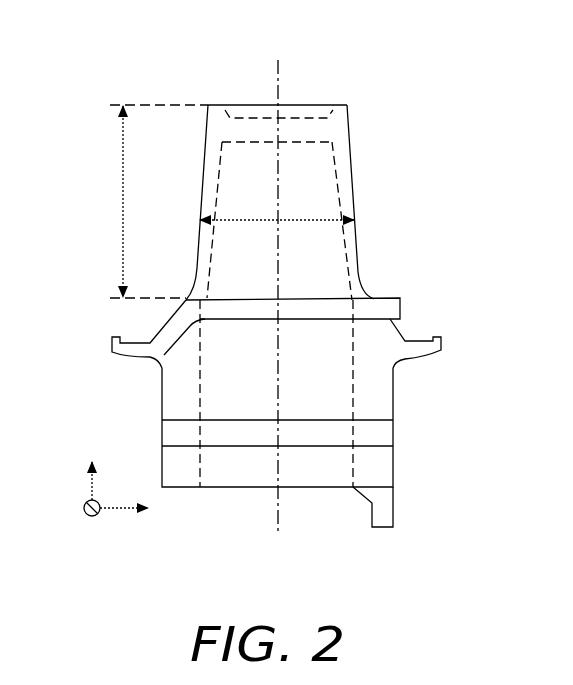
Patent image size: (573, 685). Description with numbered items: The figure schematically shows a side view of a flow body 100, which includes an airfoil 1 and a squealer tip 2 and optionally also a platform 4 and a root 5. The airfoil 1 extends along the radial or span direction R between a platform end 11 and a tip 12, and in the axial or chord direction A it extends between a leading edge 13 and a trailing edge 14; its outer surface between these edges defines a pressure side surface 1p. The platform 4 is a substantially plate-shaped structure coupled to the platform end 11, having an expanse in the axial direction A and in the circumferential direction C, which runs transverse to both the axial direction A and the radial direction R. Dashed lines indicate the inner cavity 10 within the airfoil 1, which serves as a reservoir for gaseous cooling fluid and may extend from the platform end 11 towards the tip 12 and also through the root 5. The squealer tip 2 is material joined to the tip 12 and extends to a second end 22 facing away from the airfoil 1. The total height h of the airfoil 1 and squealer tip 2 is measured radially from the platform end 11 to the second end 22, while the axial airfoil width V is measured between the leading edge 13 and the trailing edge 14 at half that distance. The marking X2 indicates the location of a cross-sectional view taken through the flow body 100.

The flow body 100 is at (309, 267).
The airfoil 1 is at (289, 154).
The pressure side surface 1p is at (240, 190).
The squealer tip 2 is at (305, 63).
The second end 22 is at (330, 96).
The tip 12 is at (293, 112).
The inner cavity 10 is at (366, 183).
The leading edge 13 is at (194, 266).
The trailing edge 14 is at (360, 222).
The platform end 11 is at (342, 292).
The platform 4 is at (402, 305).
The root 5 is at (395, 435).
The total height h is at (123, 203).
The axial airfoil width V is at (250, 223).
The section line X2 is at (274, 76).
The radial direction R is at (95, 487).
The axial direction A is at (117, 512).
The circumferential direction C is at (84, 516).